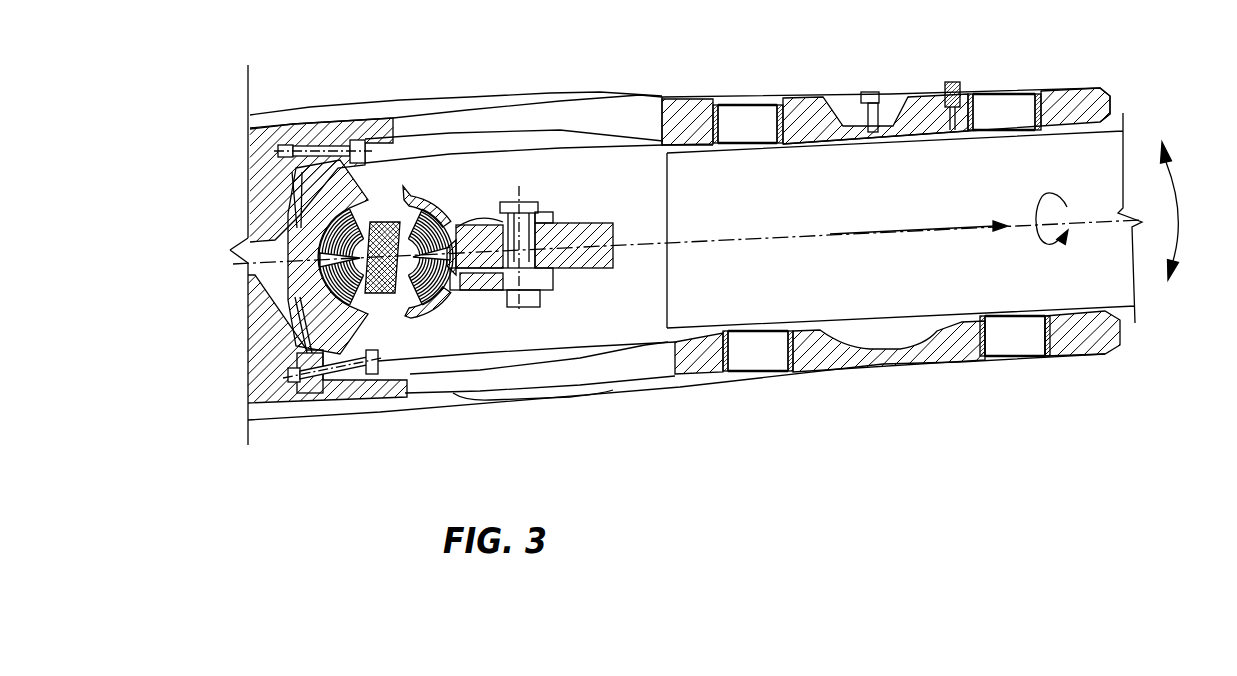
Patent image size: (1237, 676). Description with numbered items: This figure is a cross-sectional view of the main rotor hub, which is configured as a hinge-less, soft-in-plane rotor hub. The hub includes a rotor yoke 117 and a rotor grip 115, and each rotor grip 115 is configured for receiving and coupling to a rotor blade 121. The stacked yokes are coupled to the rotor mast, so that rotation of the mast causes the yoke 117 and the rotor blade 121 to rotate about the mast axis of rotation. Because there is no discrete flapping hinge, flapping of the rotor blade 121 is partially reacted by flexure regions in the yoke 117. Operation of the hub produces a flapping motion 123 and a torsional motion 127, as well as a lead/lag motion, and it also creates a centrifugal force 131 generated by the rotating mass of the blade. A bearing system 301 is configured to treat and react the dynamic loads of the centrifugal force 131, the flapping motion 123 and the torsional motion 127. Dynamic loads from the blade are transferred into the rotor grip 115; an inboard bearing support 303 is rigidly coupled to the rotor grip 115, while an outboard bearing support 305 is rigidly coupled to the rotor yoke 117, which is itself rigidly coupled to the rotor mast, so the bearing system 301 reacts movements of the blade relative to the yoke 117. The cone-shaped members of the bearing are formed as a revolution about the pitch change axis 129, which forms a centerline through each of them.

The rotor grip 115 is at (1047, 92).
The rotor yoke 117 is at (610, 220).
The rotor blade 121 is at (666, 292).
The flapping motion 123 is at (1178, 200).
The torsional motion 127 is at (1047, 240).
The pitch change axis 129 is at (788, 236).
The centrifugal force 131 is at (912, 232).
The bearing system 301 is at (423, 184).
The inboard bearing support 303 is at (333, 165).
The outboard bearing support 305 is at (428, 190).